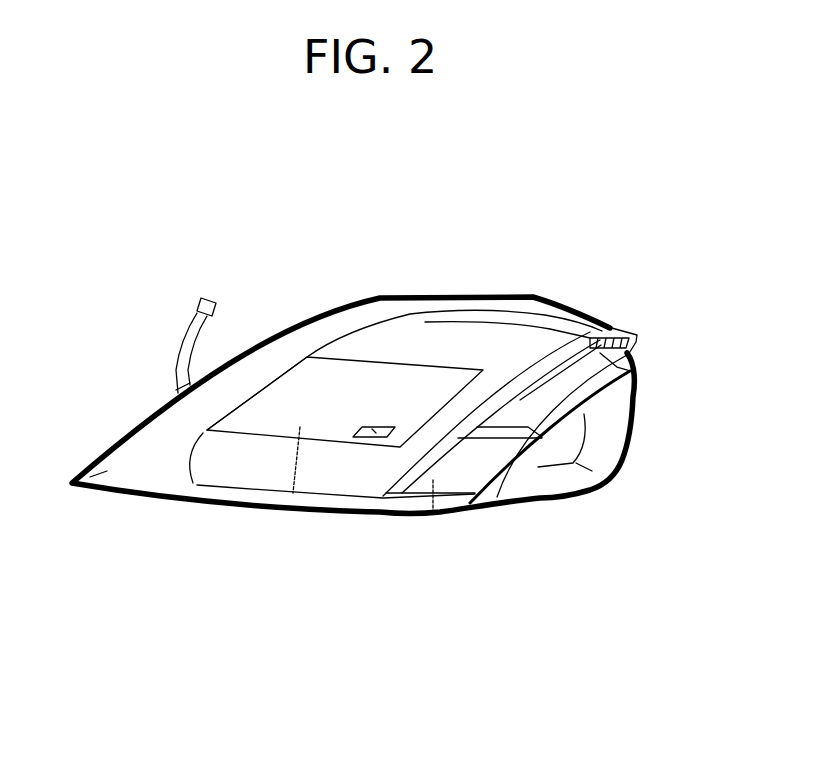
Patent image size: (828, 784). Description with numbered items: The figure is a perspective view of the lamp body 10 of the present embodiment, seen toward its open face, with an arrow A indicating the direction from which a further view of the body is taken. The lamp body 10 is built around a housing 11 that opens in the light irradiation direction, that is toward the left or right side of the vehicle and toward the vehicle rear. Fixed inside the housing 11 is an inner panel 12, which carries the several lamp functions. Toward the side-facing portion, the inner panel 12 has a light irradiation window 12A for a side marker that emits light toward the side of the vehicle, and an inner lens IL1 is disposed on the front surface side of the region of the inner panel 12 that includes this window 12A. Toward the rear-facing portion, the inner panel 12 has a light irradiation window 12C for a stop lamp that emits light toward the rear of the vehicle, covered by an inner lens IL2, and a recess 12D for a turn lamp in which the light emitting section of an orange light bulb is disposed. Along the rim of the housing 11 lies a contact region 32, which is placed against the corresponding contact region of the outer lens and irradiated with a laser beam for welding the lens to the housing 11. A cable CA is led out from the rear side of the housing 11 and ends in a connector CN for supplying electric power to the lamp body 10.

The lamp body 10 is at (397, 156).
The housing 11 is at (370, 301).
The inner panel 12 is at (435, 334).
The light irradiation window 12A is at (368, 439).
The light irradiation window 12C is at (467, 466).
The recess 12D is at (555, 453).
The contact region 32 is at (228, 507).
The inner lens IL1 is at (295, 480).
The inner lens IL2 is at (433, 512).
The connector CN is at (217, 306).
The cable CA is at (198, 333).
The arrow A is at (618, 502).